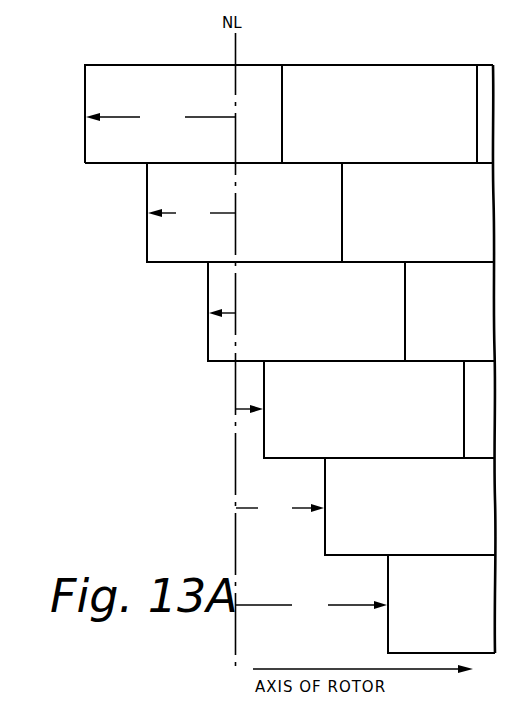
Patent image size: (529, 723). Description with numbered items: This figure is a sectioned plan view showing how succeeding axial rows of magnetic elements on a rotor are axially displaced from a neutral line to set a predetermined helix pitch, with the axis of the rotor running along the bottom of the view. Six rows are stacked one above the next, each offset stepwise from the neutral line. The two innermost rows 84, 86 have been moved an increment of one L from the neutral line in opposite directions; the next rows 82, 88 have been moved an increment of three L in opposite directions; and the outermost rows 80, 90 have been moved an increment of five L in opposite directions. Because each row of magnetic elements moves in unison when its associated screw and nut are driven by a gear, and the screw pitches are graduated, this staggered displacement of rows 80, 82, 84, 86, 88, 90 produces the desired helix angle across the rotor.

The row of magnetic elements 80 is at (80, 95).
The row of magnetic elements 82 is at (140, 243).
The row of magnetic elements 84 is at (200, 343).
The row of magnetic elements 86 is at (255, 438).
The row of magnetic elements 88 is at (316, 539).
The row of magnetic elements 90 is at (379, 638).